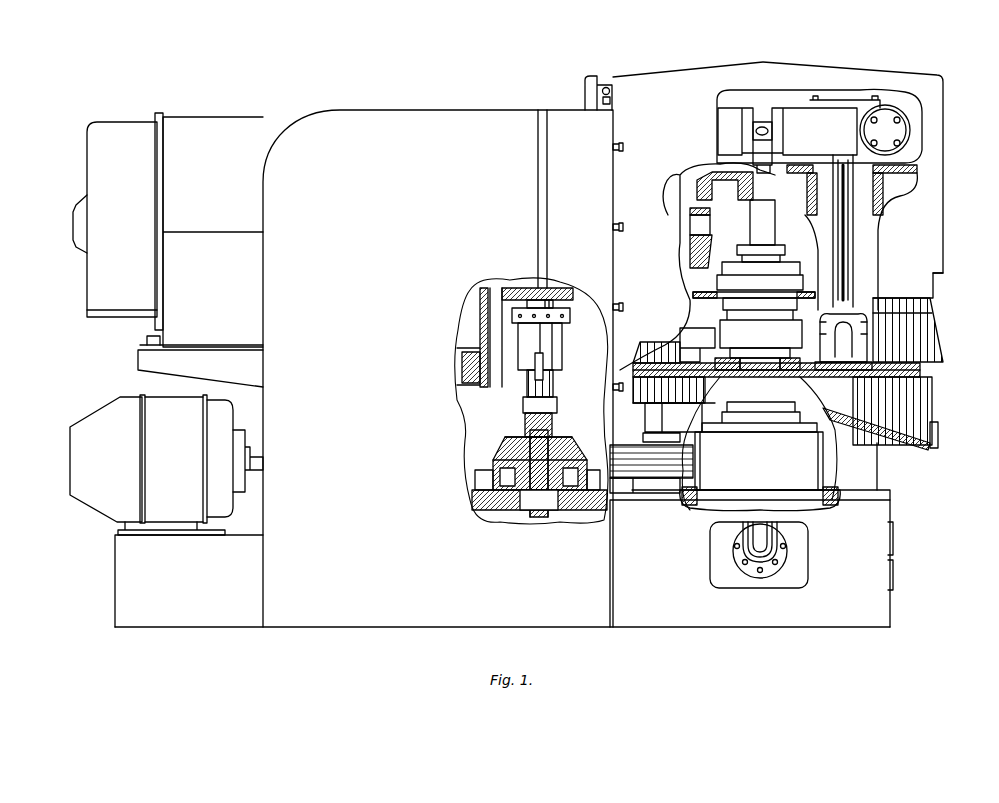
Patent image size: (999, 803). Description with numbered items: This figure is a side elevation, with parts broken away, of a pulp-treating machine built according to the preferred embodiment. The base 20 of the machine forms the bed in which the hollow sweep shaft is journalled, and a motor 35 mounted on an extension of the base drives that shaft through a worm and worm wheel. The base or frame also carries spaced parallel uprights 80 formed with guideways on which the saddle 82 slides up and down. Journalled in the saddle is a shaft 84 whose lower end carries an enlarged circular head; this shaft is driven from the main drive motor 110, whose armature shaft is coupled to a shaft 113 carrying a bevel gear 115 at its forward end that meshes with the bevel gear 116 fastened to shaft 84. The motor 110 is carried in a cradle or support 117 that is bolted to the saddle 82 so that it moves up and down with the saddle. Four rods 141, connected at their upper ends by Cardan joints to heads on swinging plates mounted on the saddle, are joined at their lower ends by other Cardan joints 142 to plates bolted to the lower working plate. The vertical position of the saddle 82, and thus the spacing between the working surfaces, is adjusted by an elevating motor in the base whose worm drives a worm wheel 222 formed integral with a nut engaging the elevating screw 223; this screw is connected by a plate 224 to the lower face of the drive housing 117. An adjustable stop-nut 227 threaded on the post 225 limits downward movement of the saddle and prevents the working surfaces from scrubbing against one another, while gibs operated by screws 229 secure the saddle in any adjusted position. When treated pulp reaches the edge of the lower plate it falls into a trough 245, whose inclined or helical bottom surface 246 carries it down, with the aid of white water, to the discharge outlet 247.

The base 20 is at (677, 615).
The motor 35 is at (104, 494).
The uprights 80 is at (407, 127).
The saddle 82 is at (672, 82).
The shaft 84 is at (760, 220).
The main drive motor 110 is at (124, 130).
The shaft 113 is at (692, 228).
The bevel gear 115 is at (695, 190).
The bevel gear 116 is at (715, 190).
The cradle 117 is at (243, 373).
The rods 141 is at (856, 258).
The Cardan joints 142 is at (855, 332).
The worm wheel 222 is at (506, 462).
The elevating screw 223 is at (540, 508).
The plate 224 is at (563, 304).
The post 225 is at (557, 418).
The stop-nut 227 is at (572, 317).
The screws 229 is at (623, 232).
The trough 245 is at (924, 405).
The inclined bottom surface 246 is at (893, 438).
The discharge outlet 247 is at (939, 437).